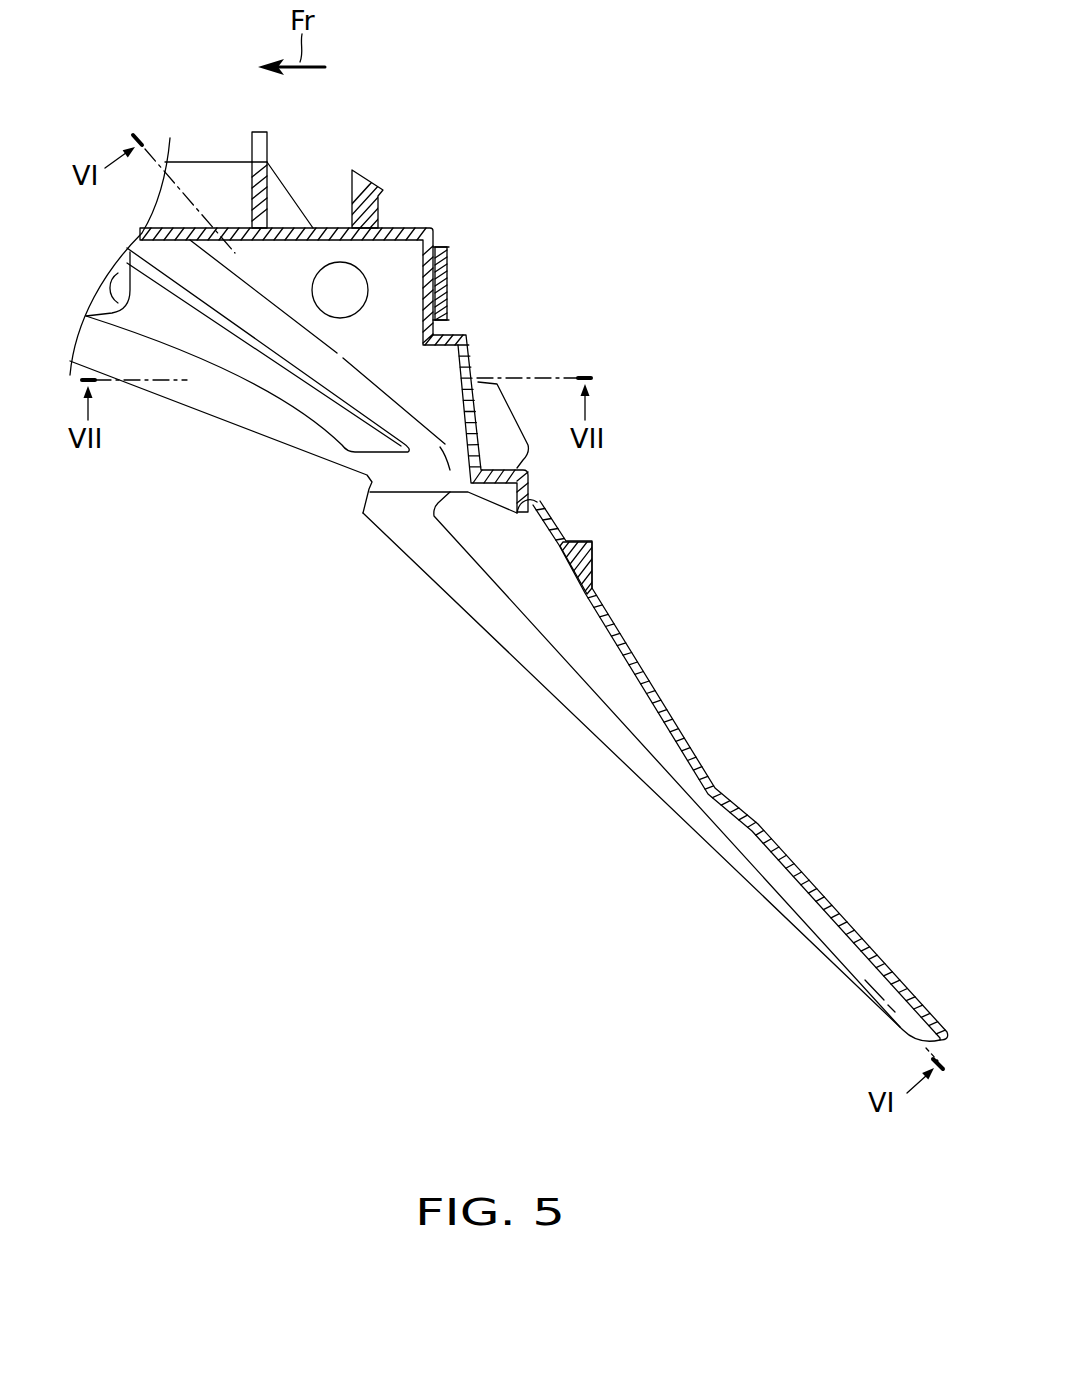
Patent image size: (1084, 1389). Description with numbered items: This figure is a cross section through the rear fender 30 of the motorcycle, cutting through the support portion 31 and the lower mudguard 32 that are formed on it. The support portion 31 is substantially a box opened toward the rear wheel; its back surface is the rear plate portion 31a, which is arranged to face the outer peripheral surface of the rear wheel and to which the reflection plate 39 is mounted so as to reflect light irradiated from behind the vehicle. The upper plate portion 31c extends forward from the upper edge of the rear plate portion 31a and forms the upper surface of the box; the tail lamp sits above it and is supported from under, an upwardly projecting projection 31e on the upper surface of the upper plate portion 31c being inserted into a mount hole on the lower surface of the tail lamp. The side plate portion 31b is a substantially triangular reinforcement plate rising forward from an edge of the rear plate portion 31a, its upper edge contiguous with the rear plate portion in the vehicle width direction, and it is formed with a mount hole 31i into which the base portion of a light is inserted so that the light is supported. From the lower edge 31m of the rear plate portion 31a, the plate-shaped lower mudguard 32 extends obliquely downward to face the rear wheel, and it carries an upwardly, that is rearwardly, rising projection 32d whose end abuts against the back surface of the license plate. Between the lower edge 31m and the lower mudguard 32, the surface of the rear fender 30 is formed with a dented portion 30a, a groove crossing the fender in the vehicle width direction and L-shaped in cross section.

The rear fender 30 is at (442, 200).
The dented portion 30a is at (537, 500).
The support portion 31 is at (400, 212).
The rear plate portion 31a is at (467, 340).
The side plate portion 31b is at (223, 407).
The upper plate portion 31c is at (220, 228).
The projection 31e is at (367, 180).
The mount hole 31i is at (343, 274).
The lower edge 31m is at (523, 473).
The lower mudguard 32 is at (660, 688).
The projection 32d is at (592, 545).
The reflection plate 39 is at (447, 272).